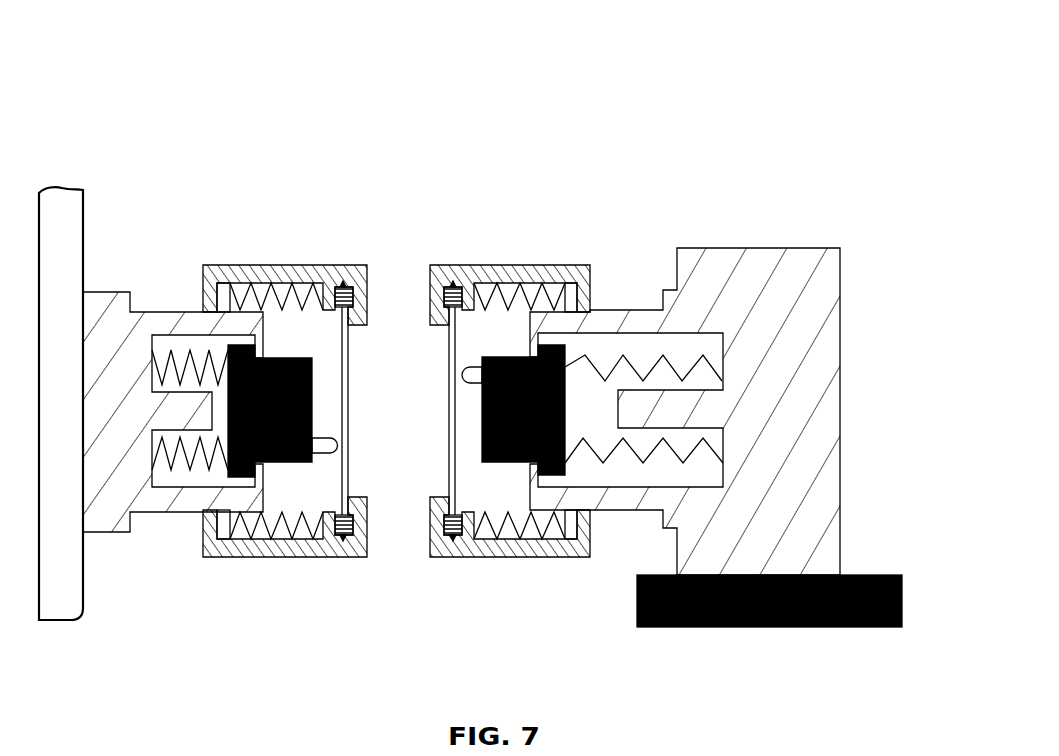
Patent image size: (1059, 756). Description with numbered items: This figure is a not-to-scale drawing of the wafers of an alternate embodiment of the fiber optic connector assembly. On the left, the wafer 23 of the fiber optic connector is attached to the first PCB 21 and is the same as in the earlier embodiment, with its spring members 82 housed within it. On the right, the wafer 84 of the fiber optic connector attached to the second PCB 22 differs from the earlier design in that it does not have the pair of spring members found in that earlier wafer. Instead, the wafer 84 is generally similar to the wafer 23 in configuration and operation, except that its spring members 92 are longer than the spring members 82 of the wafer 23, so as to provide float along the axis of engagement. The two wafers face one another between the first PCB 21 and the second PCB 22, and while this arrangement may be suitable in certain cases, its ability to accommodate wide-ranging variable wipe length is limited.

The first PCB 21 is at (68, 588).
The second PCB 22 is at (818, 622).
The wafer 23 is at (225, 350).
The spring members 82 is at (197, 463).
The wafer 84 is at (635, 334).
The spring members 92 is at (643, 458).